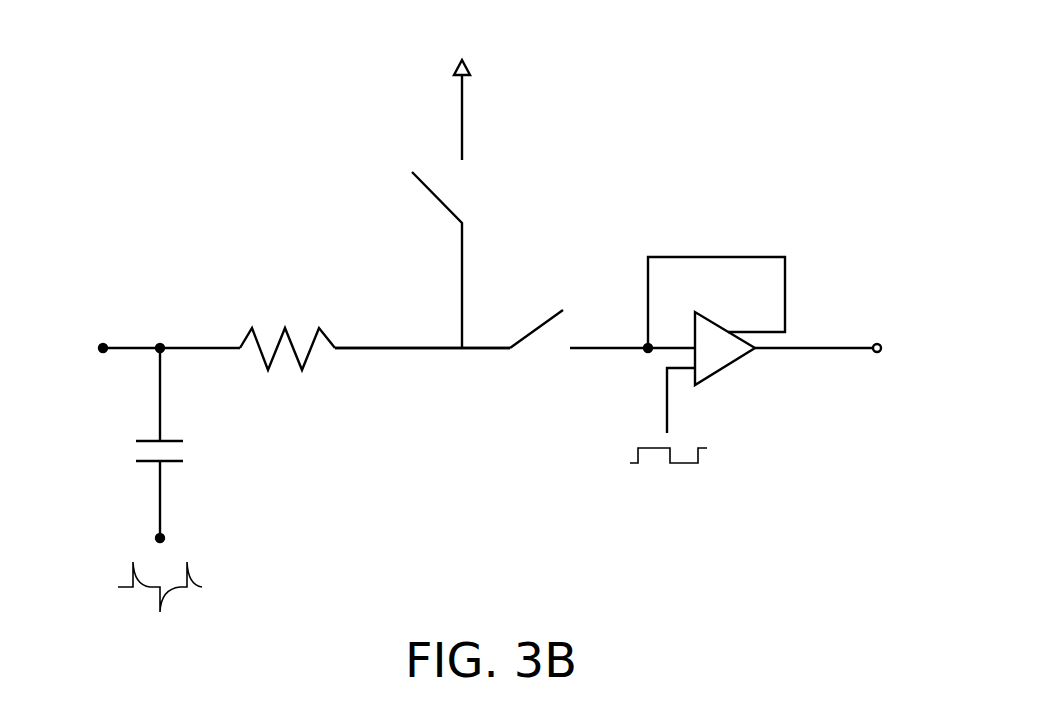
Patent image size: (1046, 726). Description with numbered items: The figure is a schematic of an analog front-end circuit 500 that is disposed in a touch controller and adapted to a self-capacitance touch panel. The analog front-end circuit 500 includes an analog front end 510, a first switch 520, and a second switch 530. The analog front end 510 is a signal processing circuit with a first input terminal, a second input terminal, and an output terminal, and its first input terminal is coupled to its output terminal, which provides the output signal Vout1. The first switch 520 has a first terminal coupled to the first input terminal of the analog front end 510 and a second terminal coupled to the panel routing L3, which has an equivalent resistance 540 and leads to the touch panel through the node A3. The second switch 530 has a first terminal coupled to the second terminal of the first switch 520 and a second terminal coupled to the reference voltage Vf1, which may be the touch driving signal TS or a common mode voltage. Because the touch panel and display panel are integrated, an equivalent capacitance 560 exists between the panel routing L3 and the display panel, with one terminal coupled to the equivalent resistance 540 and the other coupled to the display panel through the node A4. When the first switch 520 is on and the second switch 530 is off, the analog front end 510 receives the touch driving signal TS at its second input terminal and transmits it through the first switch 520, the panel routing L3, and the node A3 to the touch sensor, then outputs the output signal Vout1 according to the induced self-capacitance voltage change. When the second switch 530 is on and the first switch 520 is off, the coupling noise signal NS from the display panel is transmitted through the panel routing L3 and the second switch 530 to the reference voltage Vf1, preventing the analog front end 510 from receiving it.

The analog front-end circuit 500 is at (808, 617).
The analog front end 510 is at (725, 367).
The first switch 520 is at (543, 347).
The second switch 530 is at (463, 185).
The equivalent resistance 540 is at (290, 322).
The equivalent capacitance 560 is at (193, 449).
The panel routing L3 is at (402, 348).
The coupling noise signal NS is at (182, 588).
The touch driving signal TS is at (683, 463).
The node A3 is at (77, 348).
The node A4 is at (178, 538).
The reference voltage Vf1 is at (461, 94).
The output signal Vout1 is at (916, 348).